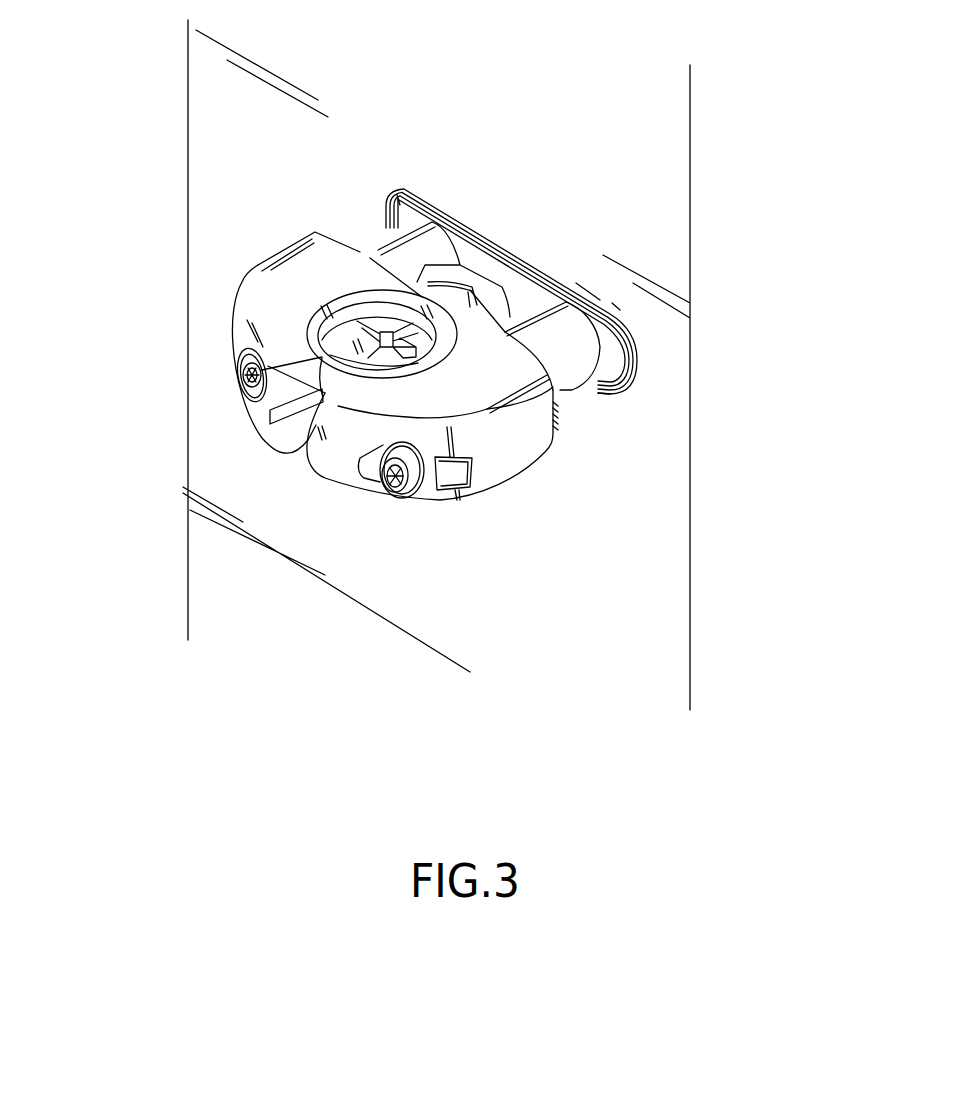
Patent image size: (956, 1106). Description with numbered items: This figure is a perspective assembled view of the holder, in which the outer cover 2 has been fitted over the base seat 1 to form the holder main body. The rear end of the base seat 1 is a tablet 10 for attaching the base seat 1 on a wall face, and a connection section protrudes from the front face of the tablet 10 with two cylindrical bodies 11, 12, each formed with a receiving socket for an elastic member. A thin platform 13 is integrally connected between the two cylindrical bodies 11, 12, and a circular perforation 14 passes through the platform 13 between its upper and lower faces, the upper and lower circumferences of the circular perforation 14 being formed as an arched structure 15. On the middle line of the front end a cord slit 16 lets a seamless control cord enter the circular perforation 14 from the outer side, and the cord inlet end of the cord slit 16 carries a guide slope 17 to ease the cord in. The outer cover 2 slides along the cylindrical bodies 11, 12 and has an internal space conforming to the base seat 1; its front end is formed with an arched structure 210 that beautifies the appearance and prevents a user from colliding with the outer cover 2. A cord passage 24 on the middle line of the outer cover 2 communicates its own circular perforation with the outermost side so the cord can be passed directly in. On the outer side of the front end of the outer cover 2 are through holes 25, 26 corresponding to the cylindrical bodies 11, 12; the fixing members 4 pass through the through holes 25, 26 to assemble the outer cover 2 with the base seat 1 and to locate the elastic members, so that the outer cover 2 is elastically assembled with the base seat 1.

The base seat 1 is at (488, 267).
The outer cover 2 is at (268, 297).
The fixing members 4 is at (394, 488).
The tablet 10 is at (577, 283).
The cylindrical body 11 is at (392, 245).
The cylindrical body 12 is at (560, 348).
The thin platform 13 is at (578, 282).
The circular perforation 14 is at (513, 313).
The arched structure 15 is at (515, 315).
The cord slit 16 is at (407, 327).
The guide slope 17 is at (390, 320).
The cord passage 24 is at (268, 404).
The through hole 25 is at (240, 345).
The through hole 26 is at (415, 496).
The arched structure 210 is at (316, 425).